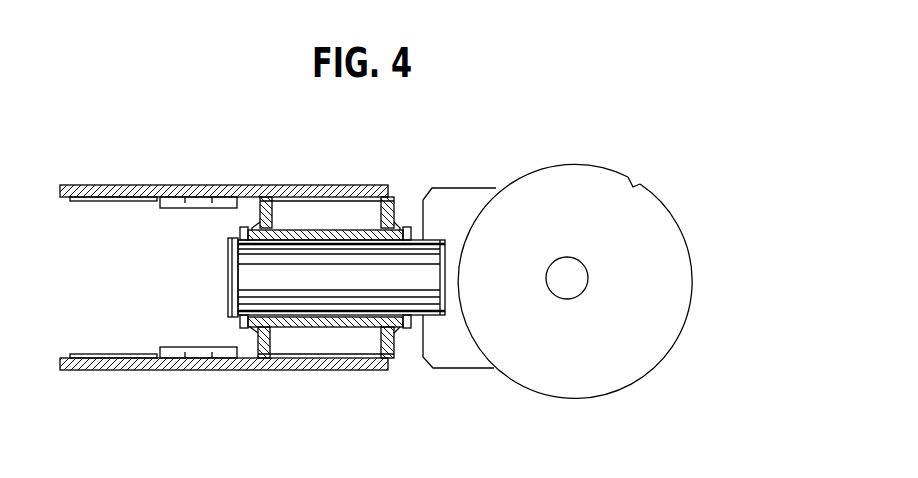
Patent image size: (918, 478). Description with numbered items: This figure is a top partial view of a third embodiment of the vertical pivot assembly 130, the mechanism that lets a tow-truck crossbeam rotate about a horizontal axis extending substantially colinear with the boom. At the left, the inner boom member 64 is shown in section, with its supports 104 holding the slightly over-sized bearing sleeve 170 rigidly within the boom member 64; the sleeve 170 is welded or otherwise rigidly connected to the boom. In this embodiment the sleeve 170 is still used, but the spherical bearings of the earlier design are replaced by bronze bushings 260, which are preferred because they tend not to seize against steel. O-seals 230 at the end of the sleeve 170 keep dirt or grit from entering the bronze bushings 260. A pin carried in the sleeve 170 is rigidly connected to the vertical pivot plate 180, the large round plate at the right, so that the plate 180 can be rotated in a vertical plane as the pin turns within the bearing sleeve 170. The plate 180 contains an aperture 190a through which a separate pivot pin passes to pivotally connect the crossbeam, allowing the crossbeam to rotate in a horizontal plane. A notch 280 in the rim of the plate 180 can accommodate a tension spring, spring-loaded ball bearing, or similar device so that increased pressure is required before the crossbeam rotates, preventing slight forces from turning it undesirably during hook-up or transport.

The inner boom member 64 is at (110, 177).
The bearing sleeve 170 is at (281, 250).
The bronze bushings 260 is at (360, 235).
The O-seals 230 is at (235, 262).
The supports 104 is at (271, 335).
The vertical pivot assembly 130 is at (618, 158).
The notch 280 is at (635, 183).
The vertical pivot plate 180 is at (646, 262).
The aperture 190a is at (558, 293).